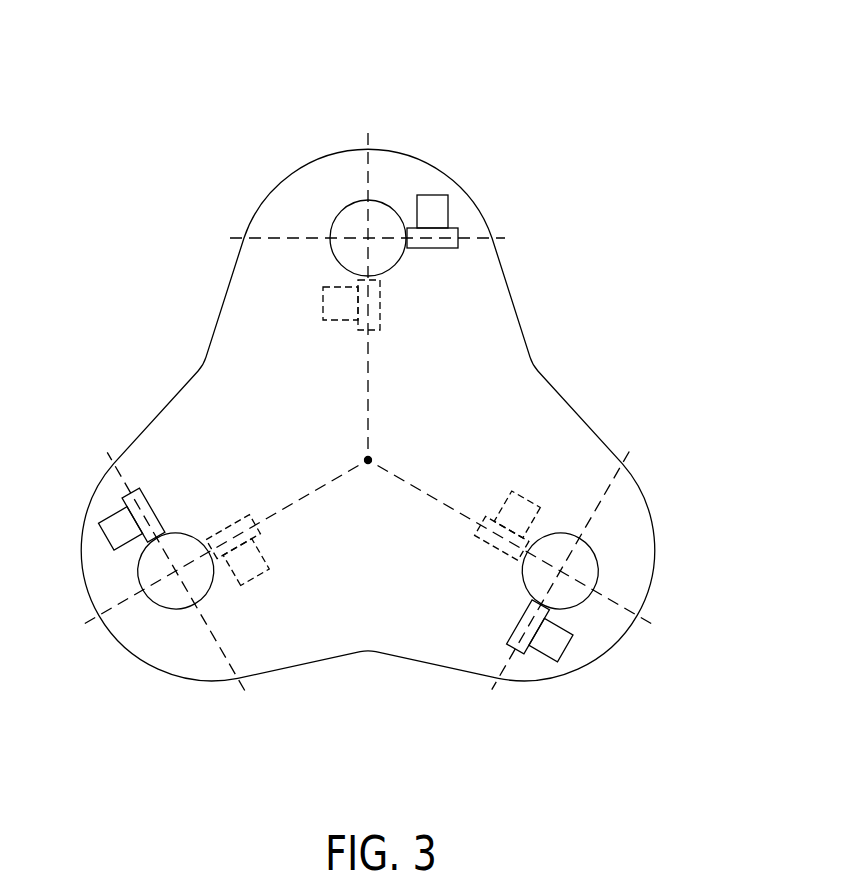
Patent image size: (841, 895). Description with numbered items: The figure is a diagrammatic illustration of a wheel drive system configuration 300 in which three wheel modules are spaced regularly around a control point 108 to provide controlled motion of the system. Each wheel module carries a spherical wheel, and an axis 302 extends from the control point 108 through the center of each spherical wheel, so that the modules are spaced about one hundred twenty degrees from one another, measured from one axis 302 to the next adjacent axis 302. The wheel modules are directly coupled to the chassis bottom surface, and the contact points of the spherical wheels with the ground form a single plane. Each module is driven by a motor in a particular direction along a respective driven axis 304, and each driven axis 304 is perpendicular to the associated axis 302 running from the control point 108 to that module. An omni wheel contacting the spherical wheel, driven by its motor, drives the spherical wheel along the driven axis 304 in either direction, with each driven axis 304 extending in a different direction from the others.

The propulsion arrangement 300 is at (216, 50).
The control point 108 is at (364, 457).
The axis 302 is at (369, 378).
The driven axis 304 is at (496, 238).